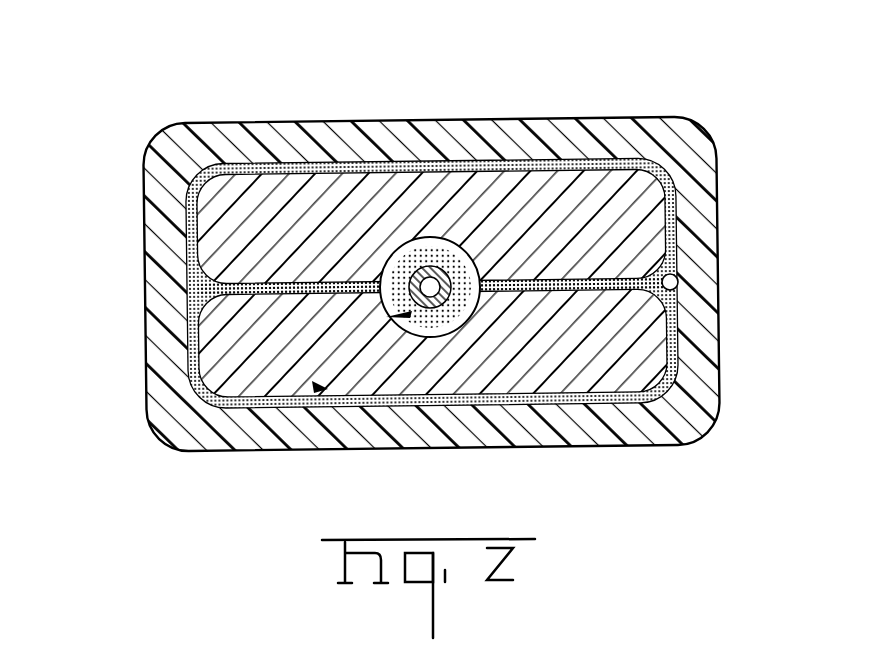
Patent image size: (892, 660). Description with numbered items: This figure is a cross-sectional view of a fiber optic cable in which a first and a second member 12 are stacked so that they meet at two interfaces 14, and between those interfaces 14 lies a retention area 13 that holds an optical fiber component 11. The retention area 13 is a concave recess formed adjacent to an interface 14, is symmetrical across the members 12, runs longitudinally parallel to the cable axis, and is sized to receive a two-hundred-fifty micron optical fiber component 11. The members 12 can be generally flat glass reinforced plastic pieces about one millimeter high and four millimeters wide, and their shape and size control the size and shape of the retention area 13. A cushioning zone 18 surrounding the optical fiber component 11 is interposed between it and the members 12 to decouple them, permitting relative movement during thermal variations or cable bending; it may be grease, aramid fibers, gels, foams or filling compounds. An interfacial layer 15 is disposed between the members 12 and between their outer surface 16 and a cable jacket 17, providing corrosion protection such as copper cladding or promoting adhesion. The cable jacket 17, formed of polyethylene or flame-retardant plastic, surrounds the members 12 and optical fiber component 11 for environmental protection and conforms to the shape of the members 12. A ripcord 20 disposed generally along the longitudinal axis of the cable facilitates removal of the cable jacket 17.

The optical fiber component 11 is at (445, 292).
The member 12 is at (645, 210).
The retention area 13 is at (428, 308).
The interface 14 is at (304, 294).
The interfacial layer 15 is at (227, 290).
The outer surface 16 is at (314, 386).
The cable jacket 17 is at (683, 137).
The cushioning zone 18 is at (583, 378).
The ripcord 20 is at (672, 282).